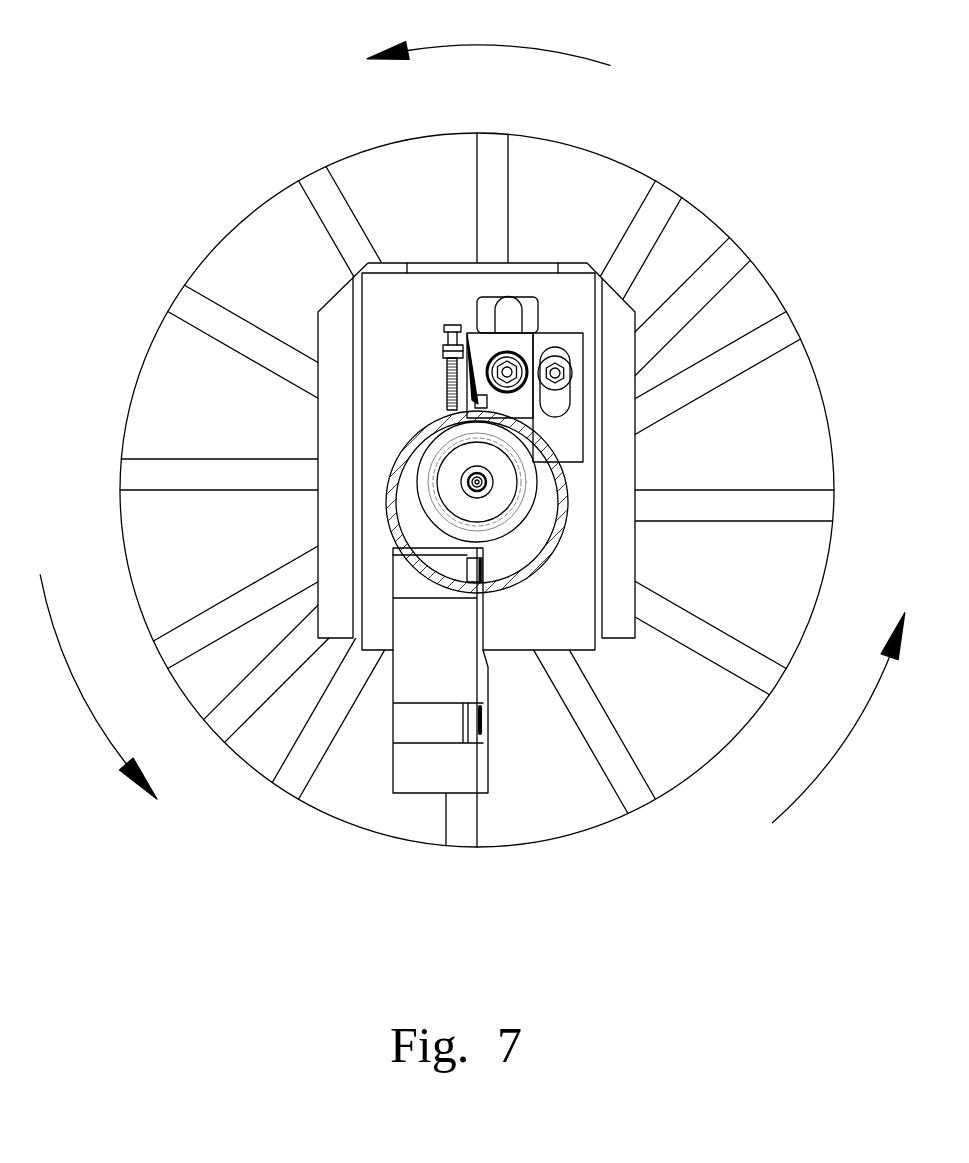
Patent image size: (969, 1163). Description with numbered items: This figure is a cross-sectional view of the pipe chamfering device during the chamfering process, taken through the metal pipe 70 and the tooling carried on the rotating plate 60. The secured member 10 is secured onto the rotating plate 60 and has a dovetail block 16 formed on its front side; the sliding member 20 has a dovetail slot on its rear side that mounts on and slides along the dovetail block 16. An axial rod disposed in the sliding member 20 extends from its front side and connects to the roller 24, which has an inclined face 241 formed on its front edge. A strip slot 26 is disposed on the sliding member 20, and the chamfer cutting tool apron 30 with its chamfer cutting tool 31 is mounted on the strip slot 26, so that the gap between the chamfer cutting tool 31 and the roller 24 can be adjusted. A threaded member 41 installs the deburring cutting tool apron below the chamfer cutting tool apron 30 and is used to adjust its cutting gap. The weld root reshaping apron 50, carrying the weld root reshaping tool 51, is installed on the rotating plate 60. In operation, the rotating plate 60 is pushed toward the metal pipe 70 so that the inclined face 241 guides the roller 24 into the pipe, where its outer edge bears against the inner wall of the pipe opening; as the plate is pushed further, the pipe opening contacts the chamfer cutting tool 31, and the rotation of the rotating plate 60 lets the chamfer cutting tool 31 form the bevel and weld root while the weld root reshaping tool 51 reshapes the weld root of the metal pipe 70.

The secured member 10 is at (323, 430).
The dovetail block 16 is at (536, 266).
The sliding member 20 is at (518, 638).
The roller 24 is at (535, 507).
The inclined face 241 is at (500, 532).
The strip slot 26 is at (513, 312).
The chamfer cutting tool apron 30 is at (572, 450).
The chamfer cutting tool 31 is at (475, 403).
The threaded member 41 is at (447, 375).
The weld root reshaping apron 50 is at (403, 773).
The weld root reshaping tool 51 is at (470, 573).
The rotating plate 60 is at (248, 212).
The metal pipe 70 is at (418, 440).